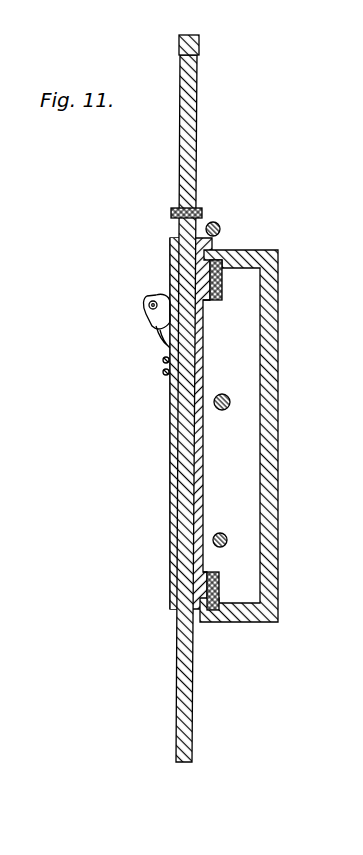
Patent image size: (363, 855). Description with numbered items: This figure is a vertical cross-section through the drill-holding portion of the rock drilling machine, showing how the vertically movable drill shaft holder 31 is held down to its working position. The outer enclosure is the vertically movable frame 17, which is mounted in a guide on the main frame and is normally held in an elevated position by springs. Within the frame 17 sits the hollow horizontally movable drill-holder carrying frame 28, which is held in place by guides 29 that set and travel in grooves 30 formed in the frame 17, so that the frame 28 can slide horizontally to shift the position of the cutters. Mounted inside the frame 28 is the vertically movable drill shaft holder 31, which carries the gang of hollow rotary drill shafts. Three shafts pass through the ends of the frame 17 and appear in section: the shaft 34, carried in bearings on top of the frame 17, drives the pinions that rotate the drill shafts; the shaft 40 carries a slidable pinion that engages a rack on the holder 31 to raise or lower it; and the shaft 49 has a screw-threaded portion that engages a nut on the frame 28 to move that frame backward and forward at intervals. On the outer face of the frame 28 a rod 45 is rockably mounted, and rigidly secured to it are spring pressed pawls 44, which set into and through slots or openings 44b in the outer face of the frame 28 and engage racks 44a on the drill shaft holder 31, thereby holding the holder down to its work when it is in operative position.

The vertically movable frame 17 is at (268, 450).
The horizontally movable drill-holder carrying frame 28 is at (170, 268).
The guides 29 is at (217, 302).
The grooves 30 is at (233, 270).
The vertically movable drill shaft holder 31 is at (199, 43).
The shaft 34 is at (220, 229).
The shaft 40 is at (214, 401).
The spring pressed pawls 44 is at (158, 322).
The racks 44a is at (180, 229).
The slots or openings 44b is at (165, 347).
The rod 45 is at (150, 302).
The shaft 49 is at (221, 533).